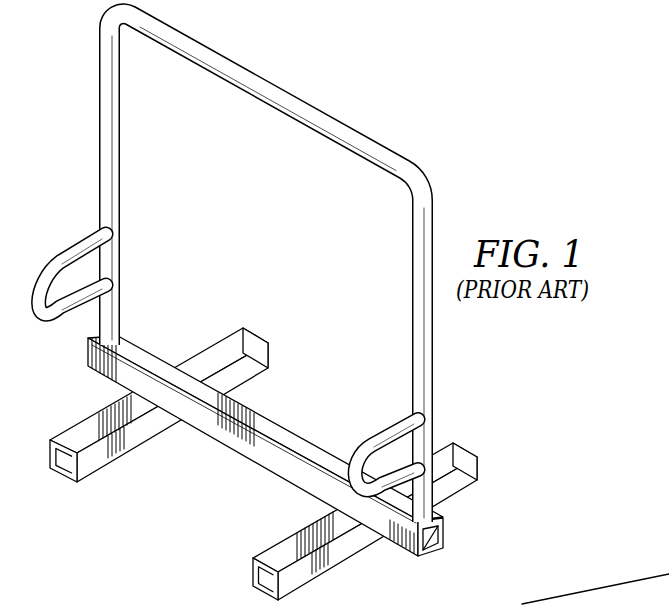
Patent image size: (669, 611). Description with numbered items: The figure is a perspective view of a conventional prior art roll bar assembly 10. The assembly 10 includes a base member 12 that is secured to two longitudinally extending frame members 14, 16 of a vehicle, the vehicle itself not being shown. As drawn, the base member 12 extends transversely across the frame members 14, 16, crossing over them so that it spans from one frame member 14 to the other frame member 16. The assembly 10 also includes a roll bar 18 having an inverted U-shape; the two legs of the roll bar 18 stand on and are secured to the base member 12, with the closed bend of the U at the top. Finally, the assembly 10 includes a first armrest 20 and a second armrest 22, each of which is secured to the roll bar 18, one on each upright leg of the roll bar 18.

The roll bar assembly 10 is at (338, 92).
The base member 12 is at (283, 440).
The frame member 14 is at (343, 557).
The frame member 16 is at (220, 352).
The roll bar 18 is at (268, 83).
The first armrest 20 is at (380, 423).
The second armrest 22 is at (78, 235).